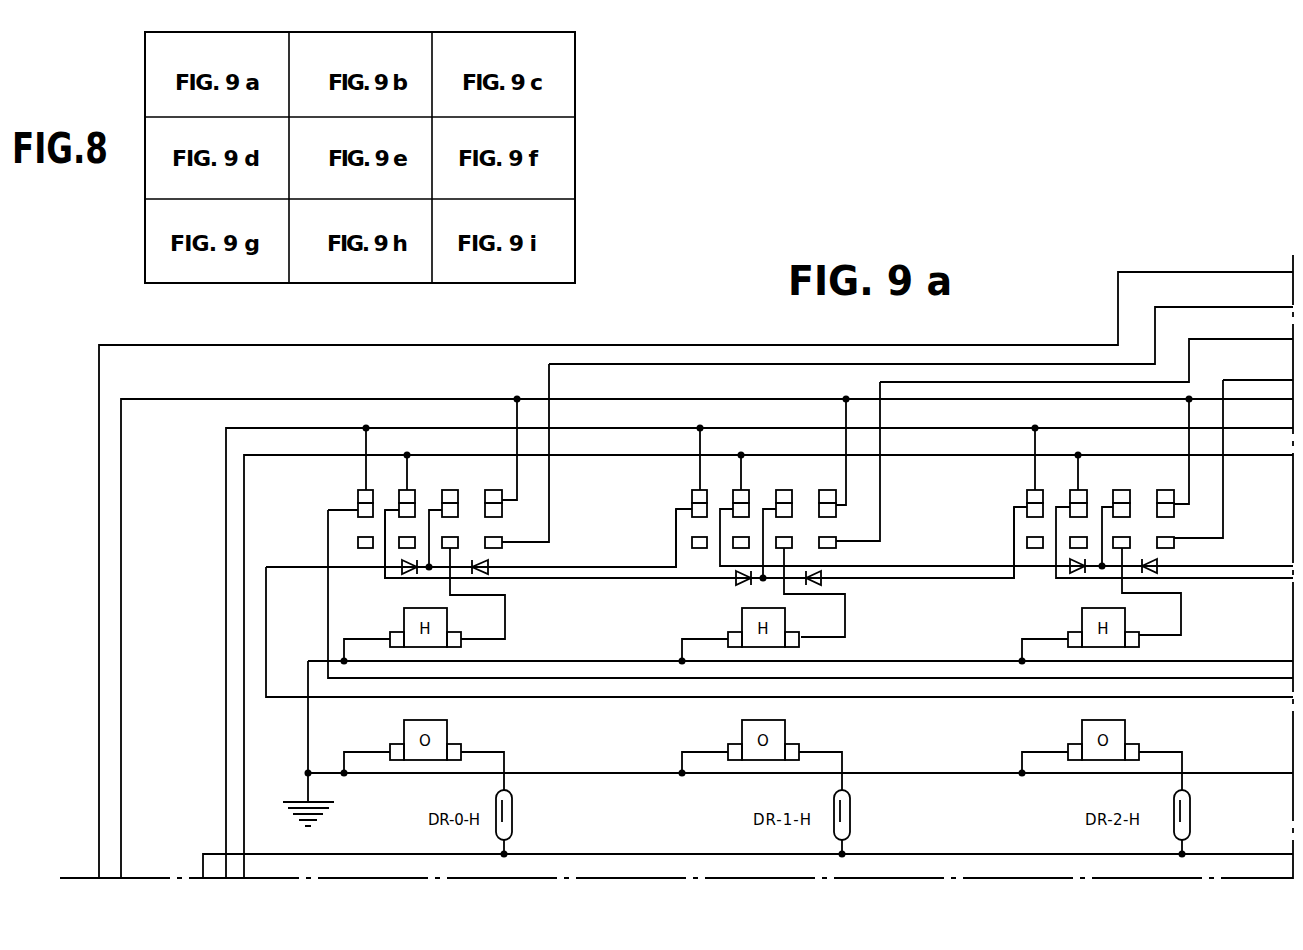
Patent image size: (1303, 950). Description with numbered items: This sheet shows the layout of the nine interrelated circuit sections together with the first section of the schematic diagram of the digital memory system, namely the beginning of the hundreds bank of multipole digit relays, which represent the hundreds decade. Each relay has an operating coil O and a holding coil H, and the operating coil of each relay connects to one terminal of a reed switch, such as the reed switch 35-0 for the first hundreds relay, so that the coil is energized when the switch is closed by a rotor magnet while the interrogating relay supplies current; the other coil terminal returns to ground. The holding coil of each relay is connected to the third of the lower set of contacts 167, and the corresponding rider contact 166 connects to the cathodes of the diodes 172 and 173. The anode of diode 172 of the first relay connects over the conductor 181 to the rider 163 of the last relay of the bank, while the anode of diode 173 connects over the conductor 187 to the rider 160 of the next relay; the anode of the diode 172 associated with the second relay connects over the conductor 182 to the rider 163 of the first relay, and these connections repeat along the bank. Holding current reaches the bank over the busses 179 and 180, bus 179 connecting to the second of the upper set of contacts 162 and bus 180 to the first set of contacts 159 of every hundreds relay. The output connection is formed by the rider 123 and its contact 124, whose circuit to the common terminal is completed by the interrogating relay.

The rider 123 is at (502, 503).
The contact 124 is at (503, 541).
The first set of contacts 159 is at (358, 494).
The rider 160 is at (358, 516).
The second of the upper set of contacts 162 is at (403, 494).
The rider 163 is at (415, 503).
The rider contact 166 is at (458, 497).
The third of the lower set of contacts 167 is at (458, 542).
The diode 172 is at (410, 573).
The diode 173 is at (490, 567).
The bus 179 is at (244, 488).
The bus 180 is at (225, 465).
The conductor 181 is at (266, 622).
The conductor 182 is at (600, 580).
The conductor 187 is at (598, 568).
The reed switch 35-0 is at (513, 805).